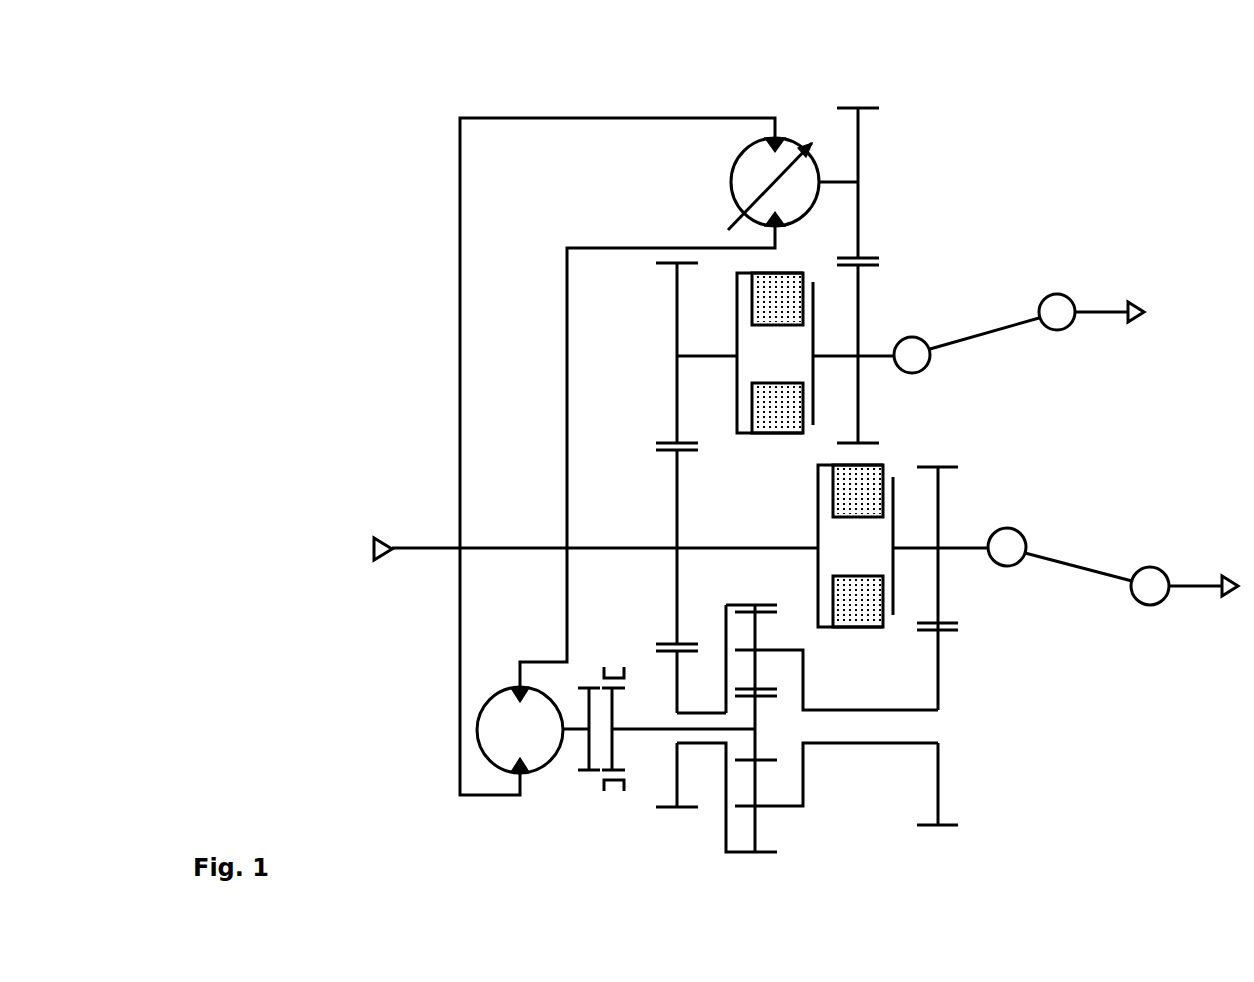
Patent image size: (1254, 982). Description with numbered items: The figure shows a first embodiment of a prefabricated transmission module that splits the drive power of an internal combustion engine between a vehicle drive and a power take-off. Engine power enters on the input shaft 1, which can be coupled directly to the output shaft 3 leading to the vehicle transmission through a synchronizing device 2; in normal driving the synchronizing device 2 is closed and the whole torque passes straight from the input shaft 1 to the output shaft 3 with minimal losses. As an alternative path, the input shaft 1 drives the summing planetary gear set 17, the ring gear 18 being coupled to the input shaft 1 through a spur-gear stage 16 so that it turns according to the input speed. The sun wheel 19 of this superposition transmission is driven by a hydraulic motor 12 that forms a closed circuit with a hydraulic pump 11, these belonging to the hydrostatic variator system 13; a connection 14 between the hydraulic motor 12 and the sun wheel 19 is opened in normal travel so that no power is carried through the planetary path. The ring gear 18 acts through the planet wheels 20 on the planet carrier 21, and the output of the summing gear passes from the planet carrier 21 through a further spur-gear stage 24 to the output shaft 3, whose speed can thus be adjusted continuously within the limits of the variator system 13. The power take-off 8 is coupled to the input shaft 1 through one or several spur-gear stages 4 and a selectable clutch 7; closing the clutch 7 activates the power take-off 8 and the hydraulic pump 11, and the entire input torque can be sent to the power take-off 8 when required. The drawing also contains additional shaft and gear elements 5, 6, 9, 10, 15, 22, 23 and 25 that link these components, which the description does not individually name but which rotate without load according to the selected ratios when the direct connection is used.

The input shaft 1 is at (446, 548).
The synchronizing device 2 is at (797, 505).
The output shaft 3 is at (970, 542).
The spur-gear stage 4 is at (646, 448).
The shaft 5 is at (672, 480).
The shaft 6 is at (672, 375).
The clutch 7 is at (768, 402).
The power take-off 8 is at (1098, 298).
The shaft 9 is at (860, 340).
The shaft 10 is at (860, 185).
The hydraulic pump 11 is at (733, 185).
The hydraulic motor 12 is at (480, 753).
The variator system 13 is at (436, 381).
The connection 14 is at (604, 812).
The shaft 15 is at (672, 810).
The spur-gear stage 16 is at (646, 640).
The summing planetary gear set 17 is at (755, 862).
The ring gear 18 is at (724, 826).
The sun wheel 19 is at (769, 762).
The planet wheels 20 is at (755, 620).
The planet carrier 21 is at (806, 682).
The shaft 22 is at (945, 775).
The shaft 23 is at (942, 603).
The spur-gear stage 24 is at (938, 836).
The output 25 is at (1095, 544).